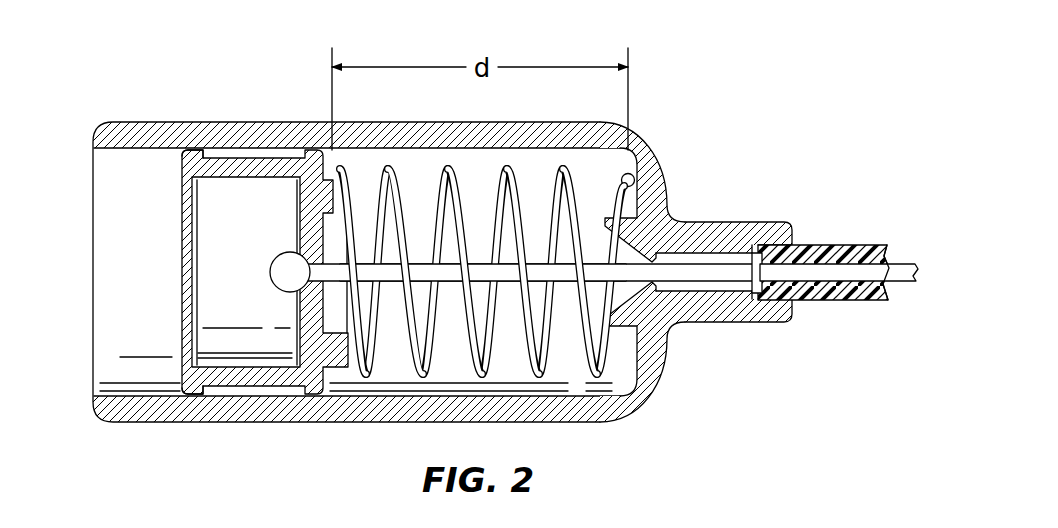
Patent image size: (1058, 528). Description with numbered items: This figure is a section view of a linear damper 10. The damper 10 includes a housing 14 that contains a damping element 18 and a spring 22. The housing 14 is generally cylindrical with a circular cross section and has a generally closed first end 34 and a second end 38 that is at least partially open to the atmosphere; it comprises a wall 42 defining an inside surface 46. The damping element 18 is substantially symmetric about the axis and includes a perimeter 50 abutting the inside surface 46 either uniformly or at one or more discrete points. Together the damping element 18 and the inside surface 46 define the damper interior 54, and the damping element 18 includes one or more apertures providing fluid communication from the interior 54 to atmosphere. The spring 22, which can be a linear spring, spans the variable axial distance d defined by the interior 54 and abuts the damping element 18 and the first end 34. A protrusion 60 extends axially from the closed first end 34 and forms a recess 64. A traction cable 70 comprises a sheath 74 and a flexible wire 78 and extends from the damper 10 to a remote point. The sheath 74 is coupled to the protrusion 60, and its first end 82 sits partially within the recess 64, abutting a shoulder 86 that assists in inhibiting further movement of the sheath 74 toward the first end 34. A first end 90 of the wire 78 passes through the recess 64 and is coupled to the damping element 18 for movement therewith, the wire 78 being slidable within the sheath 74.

The linear damper 10 is at (256, 62).
The housing 14 is at (553, 122).
The damping element 18 is at (248, 165).
The spring 22 is at (512, 170).
The first end 34 is at (664, 158).
The second end 38 is at (82, 170).
The wall 42 is at (415, 122).
The inside surface 46 is at (392, 388).
The perimeter 50 is at (192, 152).
The damper interior 54 is at (575, 360).
The protrusion 60 is at (705, 222).
The recess 64 is at (733, 258).
The traction cable 70 is at (847, 232).
The sheath 74 is at (828, 300).
The flexible wire 78 is at (908, 283).
The first end of the sheath 82 is at (757, 292).
The shoulder 86 is at (746, 290).
The first end of the wire 90 is at (381, 265).